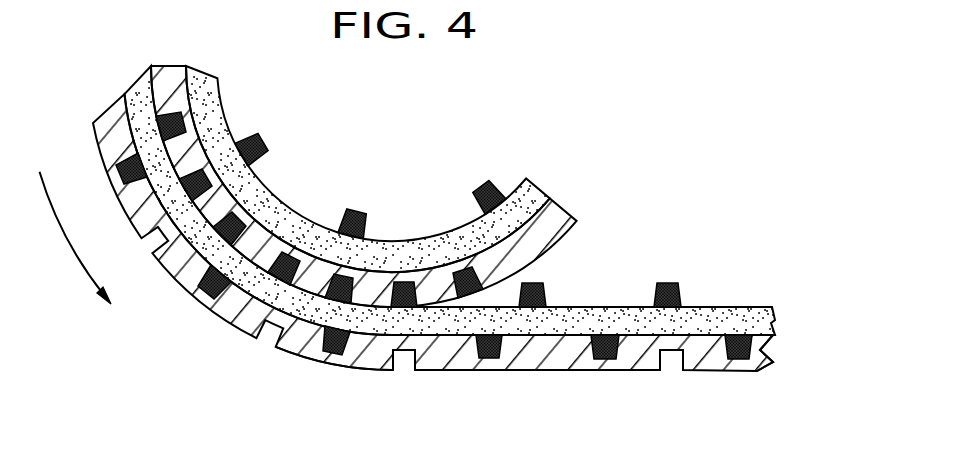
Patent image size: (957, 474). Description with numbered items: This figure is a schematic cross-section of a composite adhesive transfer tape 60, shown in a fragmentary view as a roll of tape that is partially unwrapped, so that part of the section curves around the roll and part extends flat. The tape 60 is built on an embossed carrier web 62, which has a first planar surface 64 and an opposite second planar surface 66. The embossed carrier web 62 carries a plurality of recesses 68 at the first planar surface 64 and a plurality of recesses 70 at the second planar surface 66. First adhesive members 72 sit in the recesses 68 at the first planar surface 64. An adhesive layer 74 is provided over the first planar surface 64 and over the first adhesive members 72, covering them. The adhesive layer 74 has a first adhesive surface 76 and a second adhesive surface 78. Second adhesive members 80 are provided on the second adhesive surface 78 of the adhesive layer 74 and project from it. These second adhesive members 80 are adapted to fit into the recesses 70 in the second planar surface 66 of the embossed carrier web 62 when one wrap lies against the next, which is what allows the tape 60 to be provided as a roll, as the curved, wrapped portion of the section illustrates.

The composite adhesive transfer tape 60 is at (440, 262).
The embossed carrier web 62 is at (718, 363).
The first planar surface 64 is at (573, 320).
The second planar surface 66 is at (306, 356).
The recesses 68 is at (488, 352).
The recesses 70 is at (402, 352).
The first adhesive members 72 is at (601, 357).
The adhesive layer 74 is at (277, 205).
The first adhesive surface 76 is at (758, 362).
The second adhesive surface 78 is at (742, 308).
The second adhesive members 80 is at (362, 210).